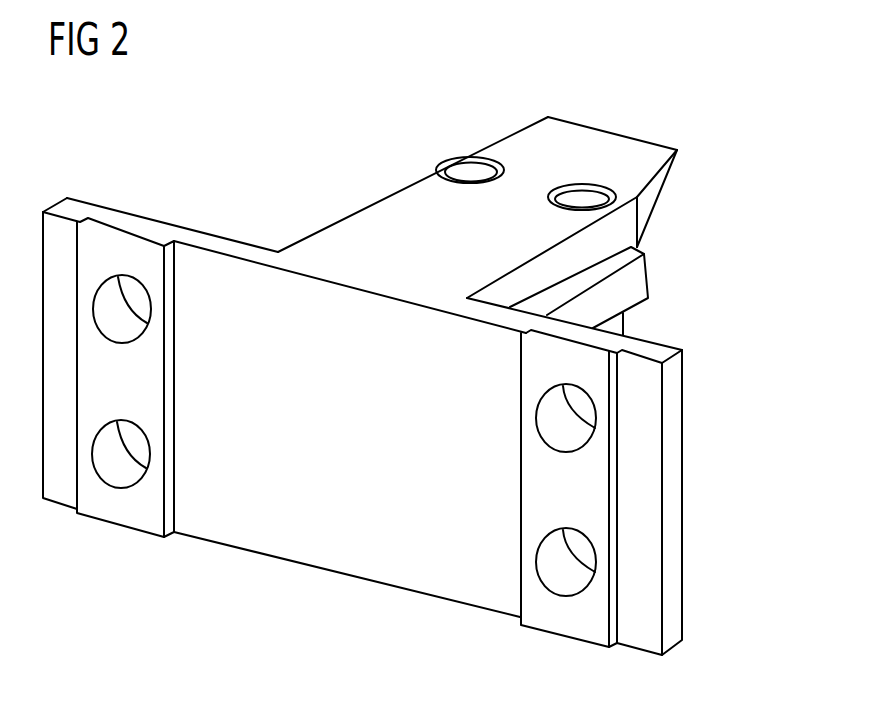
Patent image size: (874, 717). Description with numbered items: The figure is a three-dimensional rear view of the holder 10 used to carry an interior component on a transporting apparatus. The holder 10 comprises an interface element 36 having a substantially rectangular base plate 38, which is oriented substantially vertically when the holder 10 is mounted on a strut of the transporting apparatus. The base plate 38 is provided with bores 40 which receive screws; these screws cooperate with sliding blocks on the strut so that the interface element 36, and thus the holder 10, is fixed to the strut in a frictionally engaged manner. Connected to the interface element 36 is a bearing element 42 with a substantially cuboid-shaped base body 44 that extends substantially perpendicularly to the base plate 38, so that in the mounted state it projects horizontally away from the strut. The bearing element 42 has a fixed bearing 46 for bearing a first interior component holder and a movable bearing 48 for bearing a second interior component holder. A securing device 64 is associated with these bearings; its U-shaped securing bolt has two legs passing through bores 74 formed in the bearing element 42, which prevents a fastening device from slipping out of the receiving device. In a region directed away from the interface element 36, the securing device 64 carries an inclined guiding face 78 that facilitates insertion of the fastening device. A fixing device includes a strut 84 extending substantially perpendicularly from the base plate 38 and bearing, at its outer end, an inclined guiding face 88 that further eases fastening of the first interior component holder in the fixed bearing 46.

The holder 10 is at (233, 99).
The interface element 36 is at (133, 189).
The base plate 38 is at (343, 564).
The bores 40 is at (140, 308).
The bearing element 42 is at (426, 206).
The base body 44 is at (361, 217).
The fixed bearing 46 is at (689, 289).
The movable bearing 48 is at (266, 203).
The securing device 64 is at (686, 124).
The bores 74 is at (580, 200).
The guiding face 78 is at (663, 199).
The strut 84 is at (625, 299).
The guiding face 88 is at (607, 253).